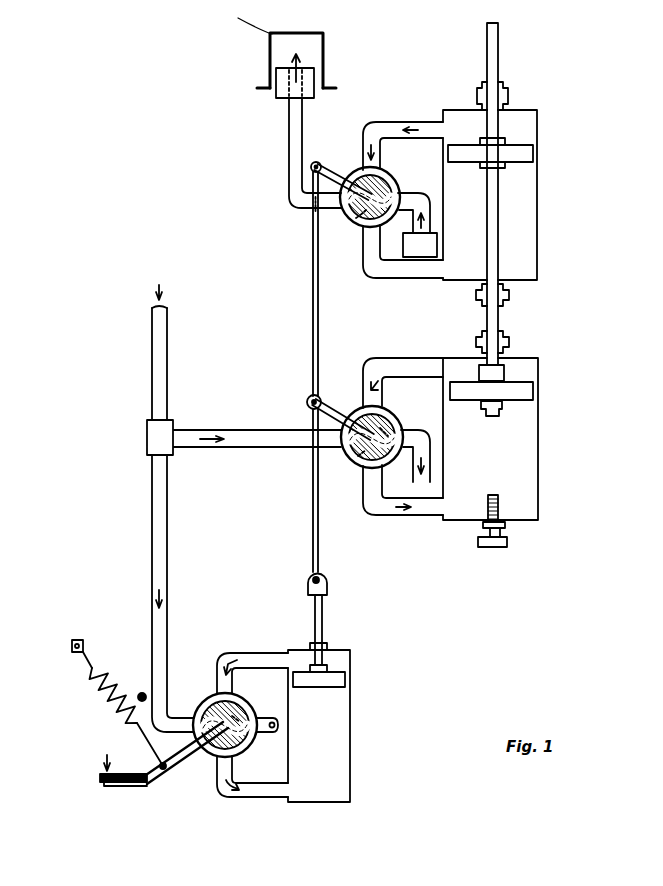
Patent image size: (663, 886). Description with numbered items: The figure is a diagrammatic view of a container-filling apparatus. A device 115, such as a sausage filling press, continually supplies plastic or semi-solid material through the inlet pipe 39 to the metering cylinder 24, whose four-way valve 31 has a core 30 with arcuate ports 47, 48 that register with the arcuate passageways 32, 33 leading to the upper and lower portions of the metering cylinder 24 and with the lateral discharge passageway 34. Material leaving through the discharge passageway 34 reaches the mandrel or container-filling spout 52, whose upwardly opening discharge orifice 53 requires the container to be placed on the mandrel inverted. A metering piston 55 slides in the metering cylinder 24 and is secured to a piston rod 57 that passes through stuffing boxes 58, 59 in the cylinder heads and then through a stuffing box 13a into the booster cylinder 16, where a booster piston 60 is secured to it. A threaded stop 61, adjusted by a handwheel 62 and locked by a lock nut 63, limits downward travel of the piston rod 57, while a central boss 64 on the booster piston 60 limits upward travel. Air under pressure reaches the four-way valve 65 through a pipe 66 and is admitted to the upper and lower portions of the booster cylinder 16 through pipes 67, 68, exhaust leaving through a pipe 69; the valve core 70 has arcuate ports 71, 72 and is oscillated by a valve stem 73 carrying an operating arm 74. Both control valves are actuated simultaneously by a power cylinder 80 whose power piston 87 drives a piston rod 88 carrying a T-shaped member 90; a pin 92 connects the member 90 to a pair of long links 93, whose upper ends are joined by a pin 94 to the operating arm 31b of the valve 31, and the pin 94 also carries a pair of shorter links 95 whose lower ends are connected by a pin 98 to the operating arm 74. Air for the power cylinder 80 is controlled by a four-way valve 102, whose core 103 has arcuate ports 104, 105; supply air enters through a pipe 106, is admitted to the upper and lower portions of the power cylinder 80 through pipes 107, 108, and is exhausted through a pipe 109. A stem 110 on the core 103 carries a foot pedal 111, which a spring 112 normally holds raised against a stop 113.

The mandrel 52 is at (276, 74).
The discharge orifice 53 is at (305, 82).
The lateral discharge passageway 34 is at (289, 192).
The valve core 30 is at (398, 182).
The arcuate port 48 is at (380, 176).
The arcuate port 47 is at (366, 215).
The arcuate passageway 32 is at (420, 130).
The arcuate passageway 33 is at (386, 270).
The inlet pipe 39 is at (412, 199).
The device 115 is at (428, 252).
The metering cylinder 24 is at (552, 228).
The piston rod 57 is at (500, 318).
The stuffing box 59 is at (508, 94).
The metering piston 55 is at (533, 155).
The stuffing box 58 is at (510, 296).
The stuffing box 13a is at (510, 343).
The booster cylinder 16 is at (555, 469).
The central boss 64 is at (506, 373).
The booster piston 60 is at (533, 392).
The threaded stop 61 is at (499, 497).
The lock nut 63 is at (506, 526).
The handwheel 62 is at (494, 548).
The pipe 67 is at (388, 370).
The four-way valve 65 is at (356, 399).
The pipe 68 is at (390, 512).
The pipe 66 is at (238, 430).
The pipe 69 is at (416, 472).
The valve core 70 is at (357, 462).
The arcuate port 71 is at (384, 418).
The valve stem 73 is at (398, 434).
The arcuate port 72 is at (372, 464).
The operating arm 31b is at (322, 162).
The pin 94 is at (311, 167).
The four-way valve 31 is at (371, 156).
The shorter links 95 is at (312, 365).
The pin 98 is at (306, 402).
The operating arm 74 is at (340, 410).
The long links 93 is at (312, 521).
The T-shaped member 90 is at (328, 588).
The pin 92 is at (312, 578).
The piston rod 88 is at (323, 620).
The power cylinder 80 is at (363, 750).
The power piston 87 is at (346, 678).
The pipe 107 is at (246, 660).
The pipe 108 is at (255, 798).
The four-way valve 102 is at (214, 684).
The stem 110 is at (205, 702).
The arcuate port 104 is at (236, 708).
The valve core 103 is at (246, 712).
The pipe 109 is at (268, 733).
The pipe 106 is at (152, 490).
The arcuate port 105 is at (210, 762).
The foot pedal 111 is at (100, 774).
The spring 112 is at (100, 690).
The stop 113 is at (142, 692).